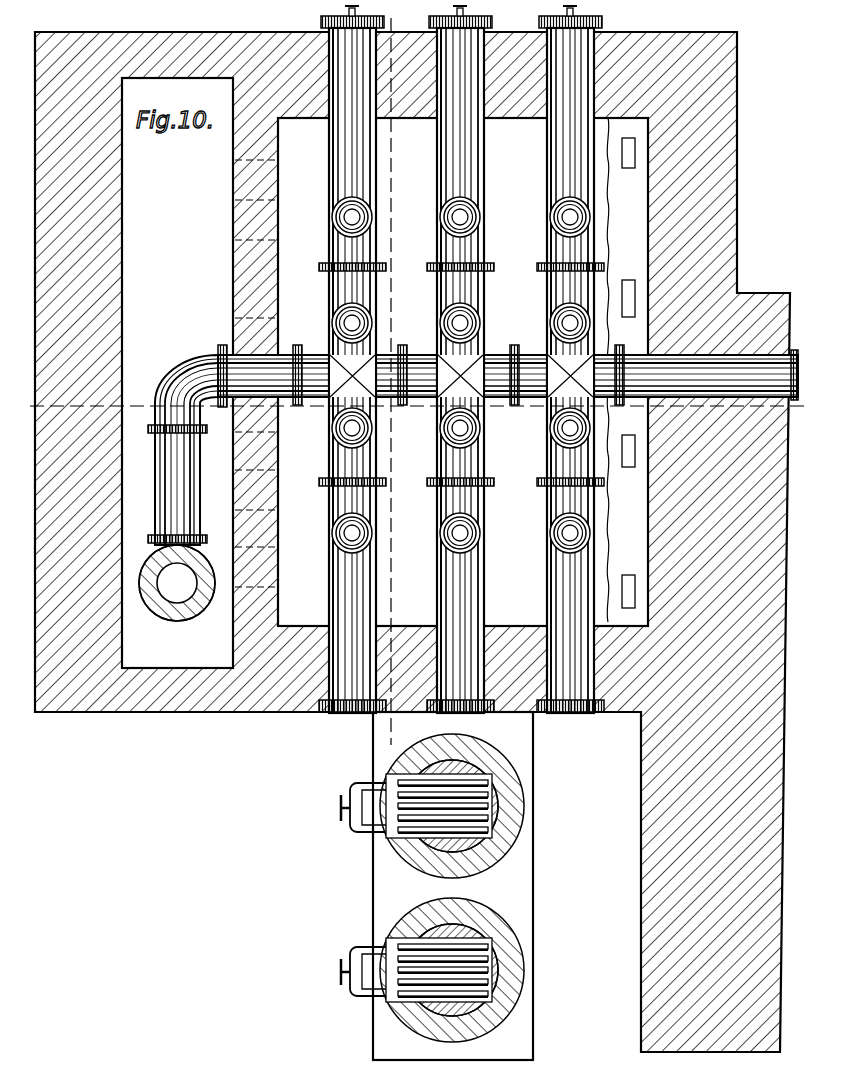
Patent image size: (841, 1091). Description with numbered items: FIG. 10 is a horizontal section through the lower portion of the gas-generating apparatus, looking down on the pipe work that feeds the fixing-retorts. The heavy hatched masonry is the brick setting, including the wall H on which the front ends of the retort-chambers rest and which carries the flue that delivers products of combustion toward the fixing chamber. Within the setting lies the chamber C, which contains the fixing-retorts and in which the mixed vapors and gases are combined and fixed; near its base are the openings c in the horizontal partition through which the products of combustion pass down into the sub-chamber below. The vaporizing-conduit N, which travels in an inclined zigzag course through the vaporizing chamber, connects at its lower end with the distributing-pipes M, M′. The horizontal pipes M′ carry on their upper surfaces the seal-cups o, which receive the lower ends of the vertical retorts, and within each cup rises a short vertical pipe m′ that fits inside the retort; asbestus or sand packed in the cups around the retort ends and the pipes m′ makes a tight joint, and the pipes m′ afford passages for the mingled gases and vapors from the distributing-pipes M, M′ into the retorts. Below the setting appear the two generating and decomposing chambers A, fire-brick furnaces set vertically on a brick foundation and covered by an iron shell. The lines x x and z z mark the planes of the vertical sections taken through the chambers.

The fixing-retort chamber C is at (385, 373).
The wall H is at (643, 826).
The distributing-pipe M is at (473, 429).
The horizontal distributing-pipes M′ is at (461, 359).
The short vertical pipes m′ is at (370, 212).
The seal-cups o is at (485, 217).
The openings c is at (627, 279).
The vaporizing-conduit N is at (177, 593).
The generating and decomposing chambers A is at (432, 891).
The section line x x is at (418, 396).
The section line z z is at (386, 374).